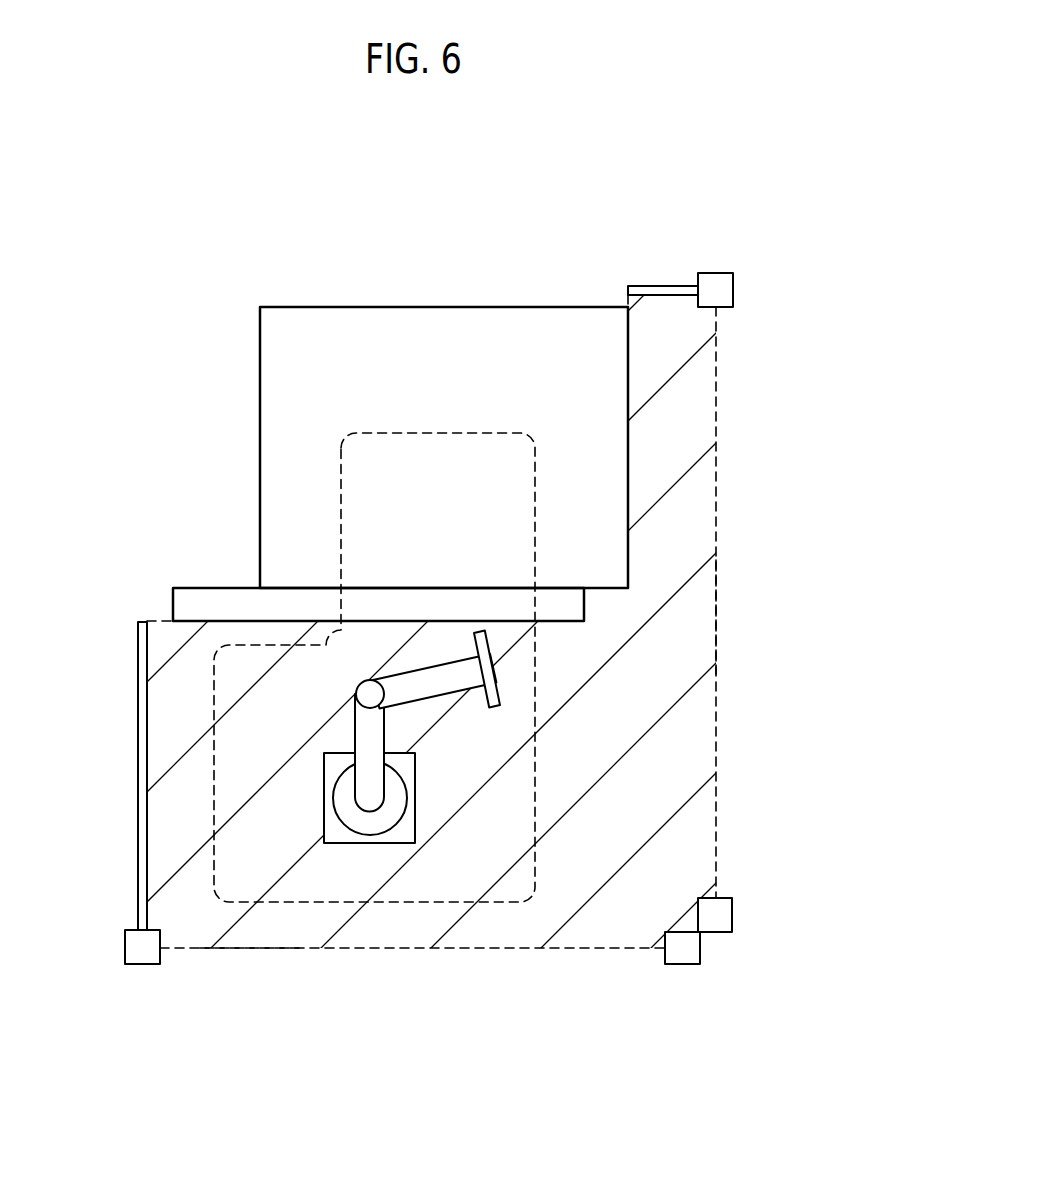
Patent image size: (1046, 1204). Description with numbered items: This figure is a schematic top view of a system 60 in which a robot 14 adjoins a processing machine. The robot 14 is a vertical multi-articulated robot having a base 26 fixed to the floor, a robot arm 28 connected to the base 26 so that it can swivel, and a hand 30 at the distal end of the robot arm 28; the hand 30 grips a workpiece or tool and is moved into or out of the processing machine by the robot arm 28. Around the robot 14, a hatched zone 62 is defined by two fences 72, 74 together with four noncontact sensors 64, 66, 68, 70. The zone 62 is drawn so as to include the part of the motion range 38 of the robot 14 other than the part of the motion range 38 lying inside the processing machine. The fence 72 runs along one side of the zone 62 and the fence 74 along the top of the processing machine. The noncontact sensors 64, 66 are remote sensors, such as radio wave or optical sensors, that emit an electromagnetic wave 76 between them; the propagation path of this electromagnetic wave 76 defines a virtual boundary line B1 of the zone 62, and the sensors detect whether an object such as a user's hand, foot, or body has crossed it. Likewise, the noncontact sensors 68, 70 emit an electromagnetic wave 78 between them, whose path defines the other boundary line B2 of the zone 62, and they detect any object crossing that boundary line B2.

The robot 14 is at (431, 848).
The base 26 is at (340, 845).
The robot arm 28 is at (370, 730).
The hand 30 is at (495, 683).
The motion range 38 is at (214, 687).
The system 60 is at (803, 132).
The zone 62 is at (623, 812).
The noncontact sensor 64 is at (143, 957).
The noncontact sensor 66 is at (685, 956).
The noncontact sensor 68 is at (725, 915).
The noncontact sensor 70 is at (733, 288).
The fence 72 is at (138, 646).
The fence 74 is at (659, 286).
The electromagnetic wave 76 is at (512, 950).
The electromagnetic wave 78 is at (717, 503).
The virtual boundary line B1 is at (247, 948).
The boundary line B2 is at (717, 615).